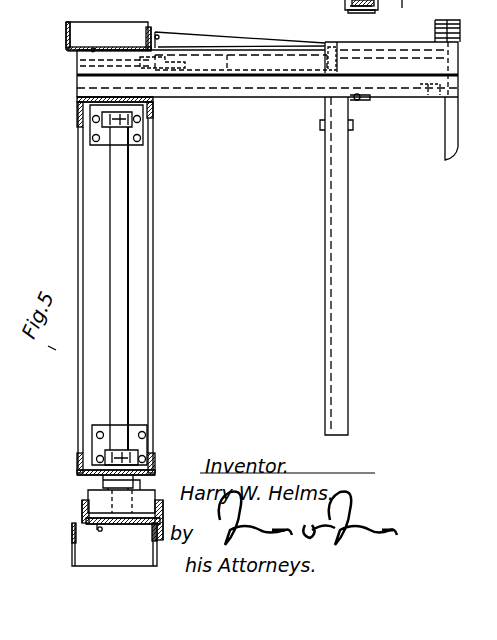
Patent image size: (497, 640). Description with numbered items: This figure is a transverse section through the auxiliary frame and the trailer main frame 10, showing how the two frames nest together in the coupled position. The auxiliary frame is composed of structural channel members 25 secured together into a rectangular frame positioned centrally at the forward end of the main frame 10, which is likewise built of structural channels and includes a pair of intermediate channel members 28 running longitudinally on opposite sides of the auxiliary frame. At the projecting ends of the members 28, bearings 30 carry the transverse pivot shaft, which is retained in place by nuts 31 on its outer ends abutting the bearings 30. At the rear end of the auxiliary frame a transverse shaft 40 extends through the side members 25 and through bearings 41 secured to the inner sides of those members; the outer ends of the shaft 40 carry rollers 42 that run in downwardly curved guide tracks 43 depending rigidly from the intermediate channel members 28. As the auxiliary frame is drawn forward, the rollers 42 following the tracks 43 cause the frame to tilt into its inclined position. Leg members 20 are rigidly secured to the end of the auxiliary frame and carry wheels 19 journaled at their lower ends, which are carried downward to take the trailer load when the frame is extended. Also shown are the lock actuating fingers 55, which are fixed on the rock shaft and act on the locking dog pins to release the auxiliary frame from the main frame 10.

The main frame 10 is at (72, 48).
The wheels 19 is at (325, 43).
The leg members 20 is at (261, 80).
The structural channel members 25 is at (88, 283).
The intermediate channel members 28 is at (68, 56).
The bearings 30 is at (346, 3).
The nuts 31 is at (358, 12).
The transverse shaft 40 is at (117, 226).
The bearings 41 is at (120, 115).
The rollers 42 is at (80, 92).
The guide tracks 43 is at (168, 68).
The lock actuating fingers 55 is at (300, 36).